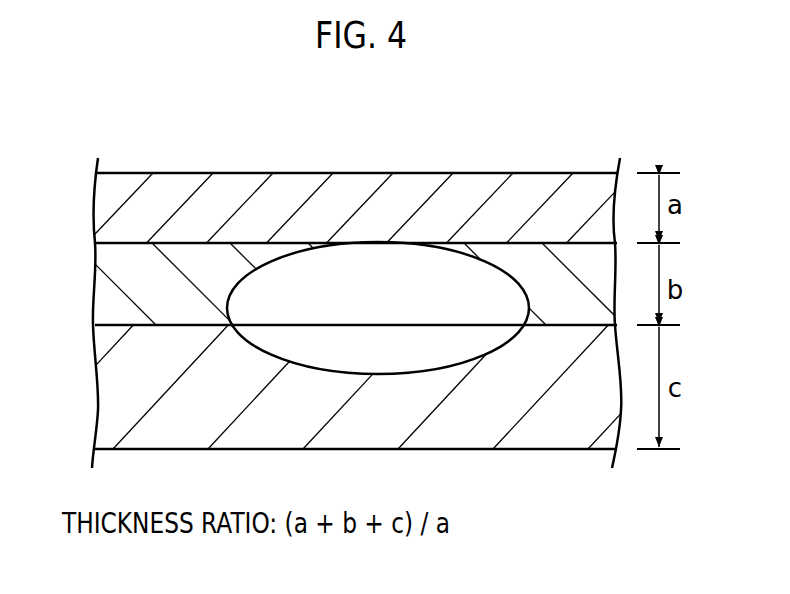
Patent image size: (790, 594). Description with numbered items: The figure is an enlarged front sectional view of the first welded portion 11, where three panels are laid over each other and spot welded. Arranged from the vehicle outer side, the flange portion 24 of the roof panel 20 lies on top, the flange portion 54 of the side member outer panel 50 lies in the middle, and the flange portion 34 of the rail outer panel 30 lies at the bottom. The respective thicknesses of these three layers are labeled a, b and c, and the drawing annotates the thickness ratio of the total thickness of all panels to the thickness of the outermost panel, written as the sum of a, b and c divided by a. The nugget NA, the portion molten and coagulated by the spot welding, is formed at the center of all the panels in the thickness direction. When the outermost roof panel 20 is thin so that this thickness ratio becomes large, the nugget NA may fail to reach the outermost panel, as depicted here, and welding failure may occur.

The first welded portion 11 is at (346, 173).
The roof panel 20 is at (546, 173).
The flange portion 24 is at (478, 190).
The nugget NA is at (367, 270).
The side member outer panel 50 is at (198, 242).
The flange portion 54 is at (135, 267).
The flange portion 34 is at (467, 435).
The rail outer panel 30 is at (530, 451).